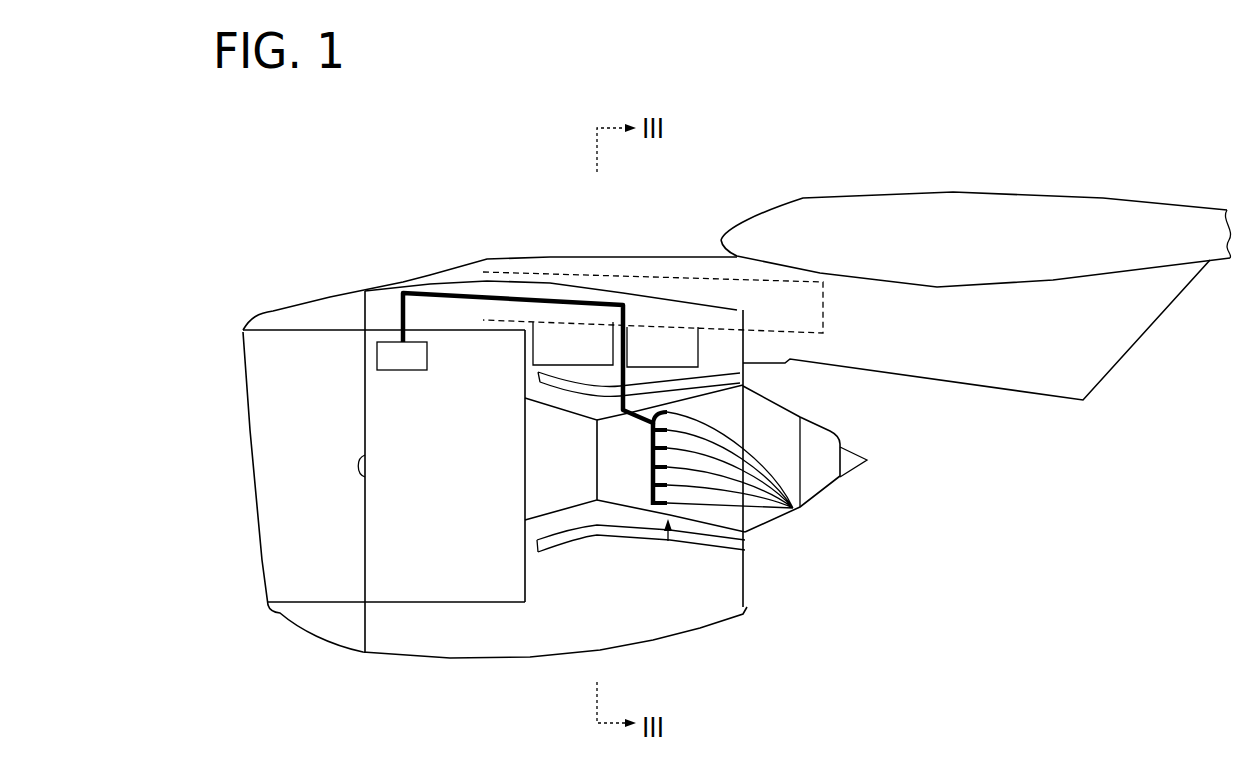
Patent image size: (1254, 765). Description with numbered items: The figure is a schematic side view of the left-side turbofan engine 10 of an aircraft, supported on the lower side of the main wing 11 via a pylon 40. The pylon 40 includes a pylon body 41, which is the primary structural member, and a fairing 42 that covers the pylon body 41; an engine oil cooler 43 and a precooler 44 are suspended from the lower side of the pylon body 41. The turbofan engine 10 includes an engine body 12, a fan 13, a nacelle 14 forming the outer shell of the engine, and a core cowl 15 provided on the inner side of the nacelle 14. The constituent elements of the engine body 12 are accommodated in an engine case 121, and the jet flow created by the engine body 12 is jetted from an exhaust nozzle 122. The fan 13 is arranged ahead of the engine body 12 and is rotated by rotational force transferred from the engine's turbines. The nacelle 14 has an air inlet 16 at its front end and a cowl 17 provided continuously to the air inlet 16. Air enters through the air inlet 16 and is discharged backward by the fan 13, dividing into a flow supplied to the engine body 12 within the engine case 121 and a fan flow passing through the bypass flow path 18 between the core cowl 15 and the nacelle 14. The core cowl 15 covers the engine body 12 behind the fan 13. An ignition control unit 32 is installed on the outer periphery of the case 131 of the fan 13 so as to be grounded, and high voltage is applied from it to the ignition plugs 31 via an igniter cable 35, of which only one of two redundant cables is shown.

The turbofan engine 10 is at (957, 128).
The main wing 11 is at (1105, 196).
The engine body 12 is at (667, 541).
The engine case 121 is at (712, 532).
The exhaust nozzle 122 is at (745, 540).
The fan 13 is at (515, 603).
The case 131 is at (397, 603).
The nacelle 14 is at (450, 657).
The core cowl 15 is at (558, 552).
The air inlet 16 is at (273, 311).
The cowl 17 is at (387, 289).
The bypass flow path 18 is at (534, 577).
The ignition plugs 31 is at (793, 508).
The ignition control unit 32 is at (420, 372).
The igniter cable 35 is at (743, 388).
The pylon 40 is at (694, 240).
The pylon body 41 is at (611, 272).
The fairing 42 is at (490, 257).
The engine oil cooler 43 is at (550, 337).
The precooler 44 is at (638, 330).